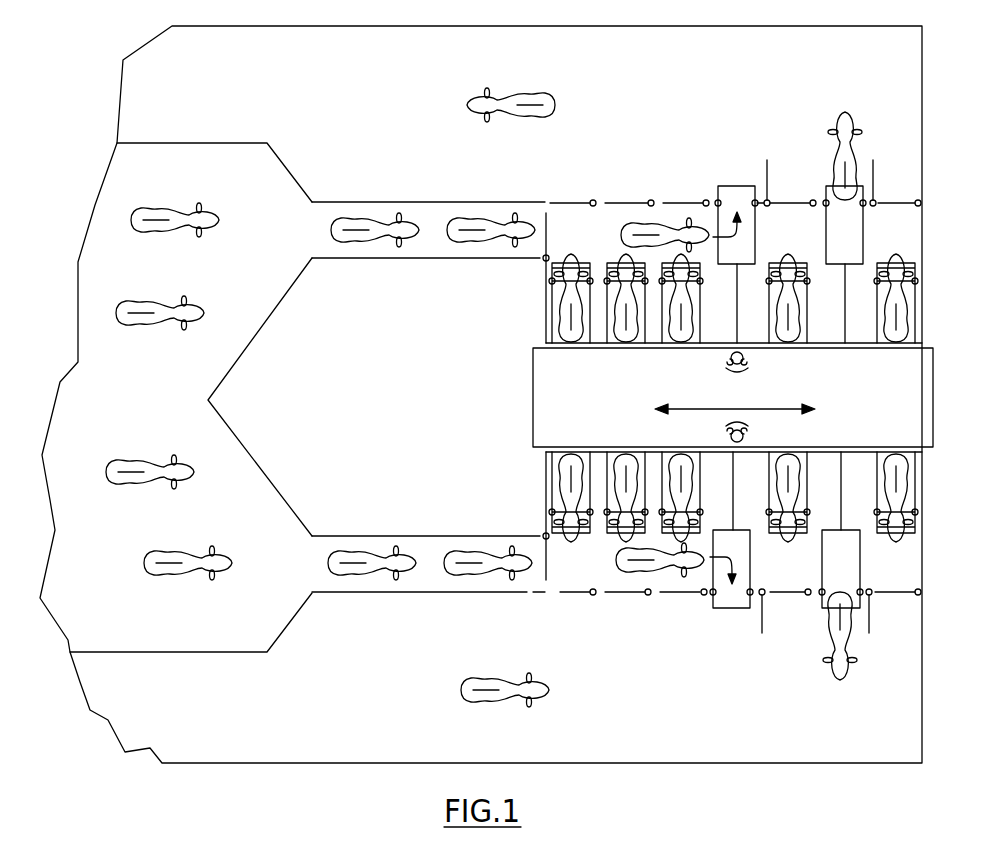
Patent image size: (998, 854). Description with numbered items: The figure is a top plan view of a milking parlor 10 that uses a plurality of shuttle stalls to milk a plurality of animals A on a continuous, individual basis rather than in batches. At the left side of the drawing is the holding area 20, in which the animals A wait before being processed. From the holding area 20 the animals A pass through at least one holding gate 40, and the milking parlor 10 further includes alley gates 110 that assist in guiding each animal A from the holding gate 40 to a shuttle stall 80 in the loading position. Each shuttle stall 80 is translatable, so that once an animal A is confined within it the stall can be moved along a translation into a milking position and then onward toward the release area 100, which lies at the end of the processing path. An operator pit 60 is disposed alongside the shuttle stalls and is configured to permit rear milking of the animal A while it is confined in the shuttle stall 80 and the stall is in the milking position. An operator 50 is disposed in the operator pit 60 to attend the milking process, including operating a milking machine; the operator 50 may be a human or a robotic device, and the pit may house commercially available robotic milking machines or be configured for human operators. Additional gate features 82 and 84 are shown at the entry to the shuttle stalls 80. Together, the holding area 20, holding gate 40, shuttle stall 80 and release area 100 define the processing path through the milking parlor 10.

The milking parlor 10 is at (418, 102).
The holding area 20 is at (212, 527).
The holding gate 40 is at (545, 246).
The operator 50 is at (757, 429).
The operator pit 60 is at (902, 433).
The shuttle stall 80 is at (860, 233).
The animal direction arrow 82 is at (718, 255).
The entry gate 84 is at (733, 186).
The release area 100 is at (757, 727).
The alley gates 110 is at (875, 175).
The animal A is at (153, 573).